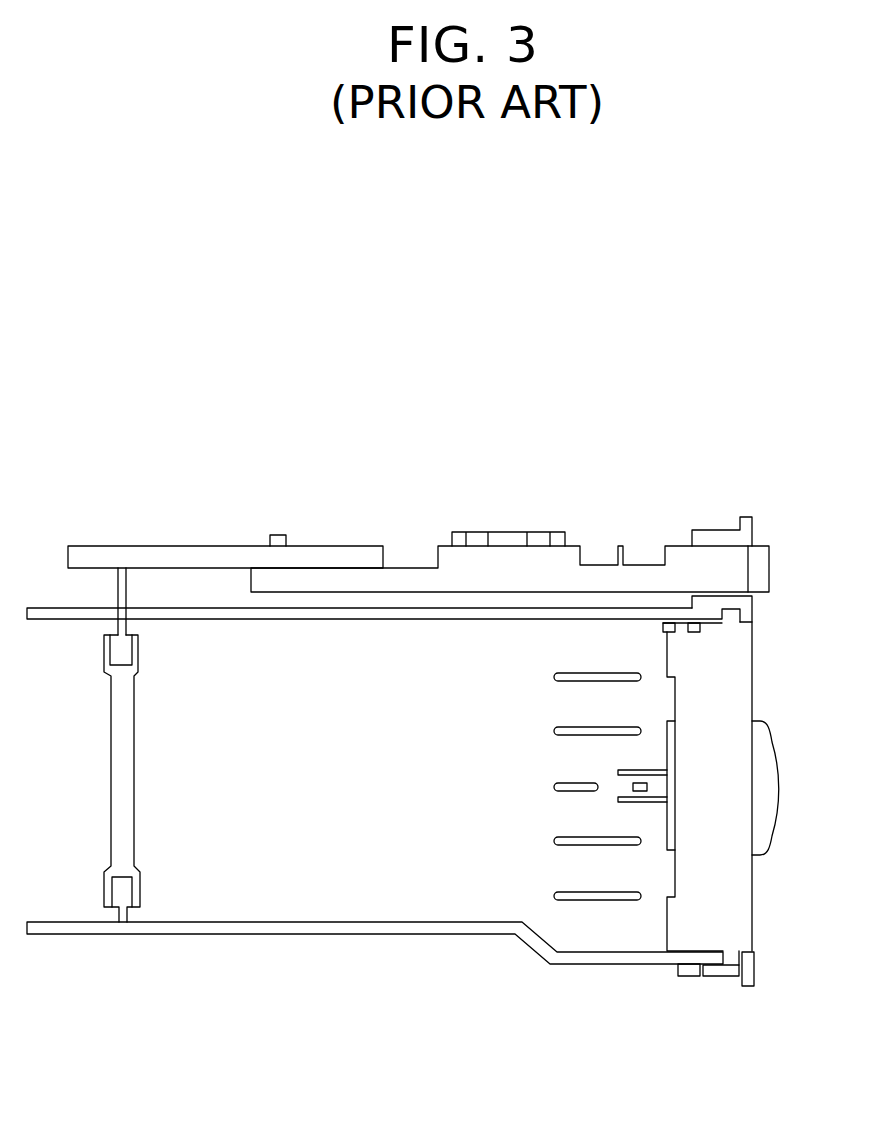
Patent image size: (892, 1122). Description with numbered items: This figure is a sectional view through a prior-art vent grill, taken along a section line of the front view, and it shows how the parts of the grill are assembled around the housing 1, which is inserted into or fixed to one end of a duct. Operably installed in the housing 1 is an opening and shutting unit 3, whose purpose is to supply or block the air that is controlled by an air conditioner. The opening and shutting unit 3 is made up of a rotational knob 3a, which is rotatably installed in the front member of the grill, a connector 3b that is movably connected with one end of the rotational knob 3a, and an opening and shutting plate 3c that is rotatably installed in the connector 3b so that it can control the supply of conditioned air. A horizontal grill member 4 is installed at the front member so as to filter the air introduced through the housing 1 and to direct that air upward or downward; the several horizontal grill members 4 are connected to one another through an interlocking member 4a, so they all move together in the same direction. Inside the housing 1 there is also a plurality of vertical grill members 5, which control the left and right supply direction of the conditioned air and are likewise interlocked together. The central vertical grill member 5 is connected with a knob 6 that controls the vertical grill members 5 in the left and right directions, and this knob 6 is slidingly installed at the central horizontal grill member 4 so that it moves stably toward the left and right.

The housing 1 is at (311, 928).
The opening and shutting unit 3 is at (643, 541).
The rotational knob 3a is at (767, 555).
The connector 3b is at (206, 553).
The opening and shutting plate 3c is at (118, 762).
The horizontal grill member 4 is at (750, 680).
The interlocking member 4a is at (662, 631).
The vertical grill member 5 is at (567, 896).
The knob 6 is at (773, 783).